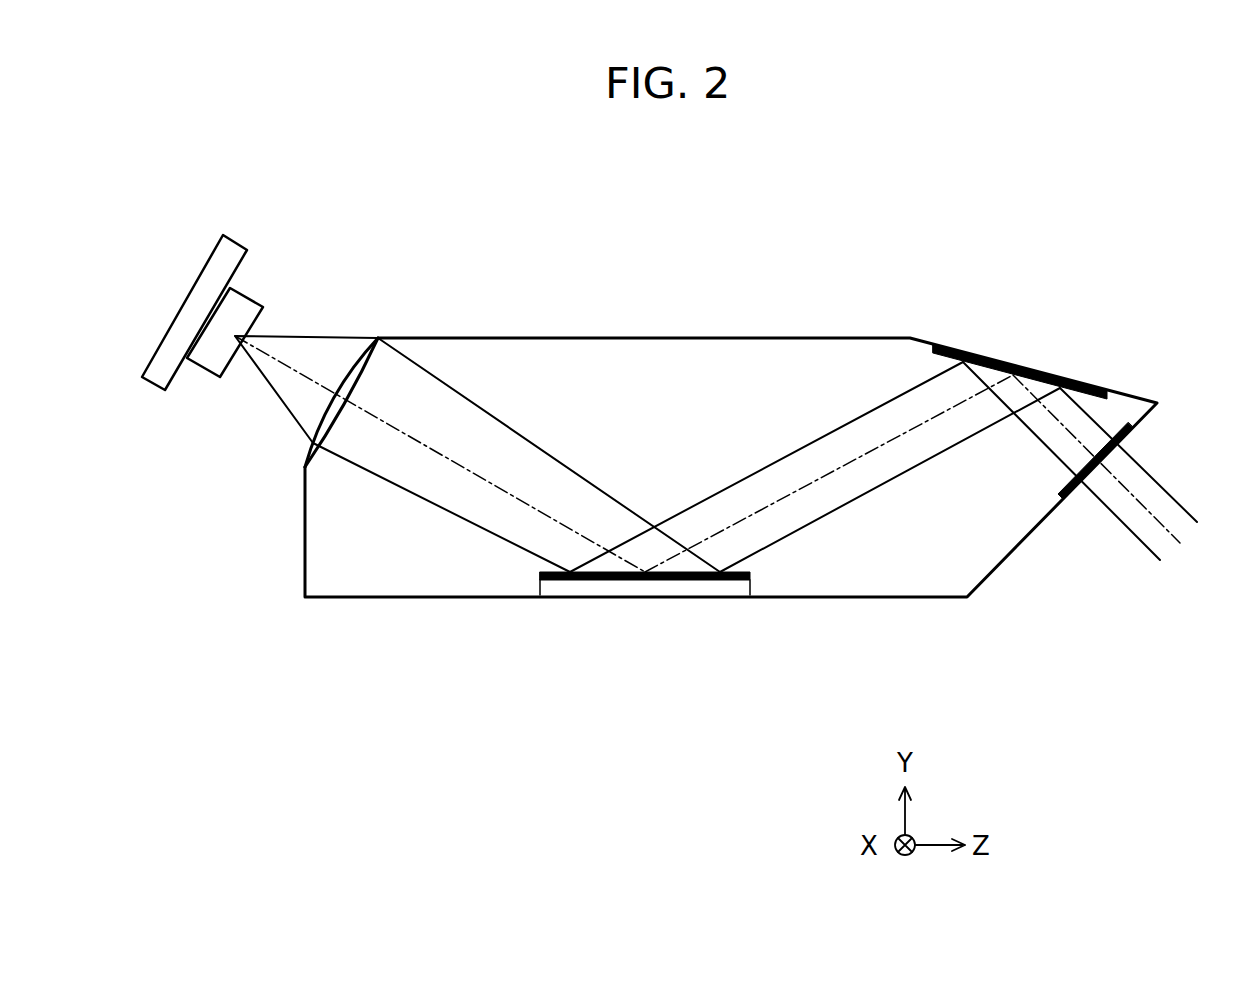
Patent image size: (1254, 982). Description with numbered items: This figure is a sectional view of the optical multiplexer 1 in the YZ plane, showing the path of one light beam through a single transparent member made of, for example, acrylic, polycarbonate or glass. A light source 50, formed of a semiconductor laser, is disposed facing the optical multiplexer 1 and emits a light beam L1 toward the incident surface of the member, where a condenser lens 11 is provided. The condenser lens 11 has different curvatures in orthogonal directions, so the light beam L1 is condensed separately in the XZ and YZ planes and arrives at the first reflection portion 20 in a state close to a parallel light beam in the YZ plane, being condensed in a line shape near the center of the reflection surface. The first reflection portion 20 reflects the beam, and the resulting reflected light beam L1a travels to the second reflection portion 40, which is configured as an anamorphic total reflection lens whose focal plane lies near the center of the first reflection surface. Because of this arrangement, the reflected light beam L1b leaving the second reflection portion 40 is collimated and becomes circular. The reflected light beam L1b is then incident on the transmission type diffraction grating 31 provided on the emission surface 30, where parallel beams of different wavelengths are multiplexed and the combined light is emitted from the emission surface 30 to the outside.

The optical multiplexer 1 is at (875, 260).
The condenser lens 11 is at (363, 343).
The first reflection portion 20 is at (630, 581).
The emission surface 30 is at (1013, 551).
The diffraction grating 31 is at (1070, 497).
The second reflection portion 40 is at (990, 353).
The light source 50 is at (210, 256).
The light beam L1 is at (306, 375).
The reflected light beam L1a is at (793, 492).
The reflected light beam L1b is at (1060, 420).